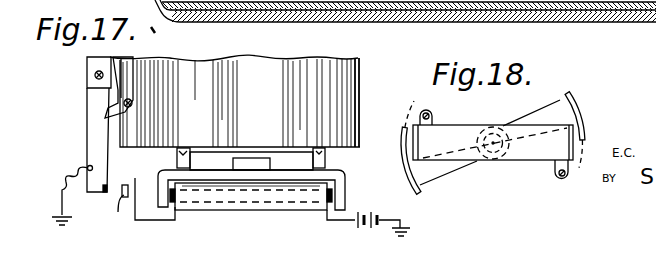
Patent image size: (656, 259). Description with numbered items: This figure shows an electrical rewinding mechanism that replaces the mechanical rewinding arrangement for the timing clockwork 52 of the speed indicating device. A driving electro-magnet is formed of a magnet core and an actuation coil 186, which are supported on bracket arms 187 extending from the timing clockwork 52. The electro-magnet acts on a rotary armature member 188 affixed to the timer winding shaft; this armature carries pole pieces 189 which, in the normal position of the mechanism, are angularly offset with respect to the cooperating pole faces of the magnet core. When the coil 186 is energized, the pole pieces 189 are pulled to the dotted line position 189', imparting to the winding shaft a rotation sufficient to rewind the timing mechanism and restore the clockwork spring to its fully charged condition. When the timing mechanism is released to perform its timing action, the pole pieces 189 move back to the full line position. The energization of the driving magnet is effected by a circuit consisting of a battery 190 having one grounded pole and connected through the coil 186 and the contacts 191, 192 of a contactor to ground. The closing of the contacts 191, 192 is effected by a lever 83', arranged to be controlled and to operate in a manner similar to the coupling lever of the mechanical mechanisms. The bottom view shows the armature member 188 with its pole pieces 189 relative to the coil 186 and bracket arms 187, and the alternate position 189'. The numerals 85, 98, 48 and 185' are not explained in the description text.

In FIG. 17, the timing clockwork 52 is at (358, 75).
In FIG. 17, the bracket 85 is at (90, 73).
In FIG. 17, the lever 83' is at (80, 140).
In FIG. 17, the latch 98 is at (133, 110).
In FIG. 17, the contact 192 is at (107, 193).
In FIG. 17, the contact 191 is at (122, 196).
In FIG. 17, the bracket arms 187 is at (177, 160).
In FIG. 18, the bracket arms 187 is at (431, 119).
In FIG. 17, the rotary armature member 188 is at (277, 168).
In FIG. 17, the pivot 48 is at (247, 157).
In FIG. 18, the pivot 48 is at (499, 126).
In FIG. 17, the pole pieces 189 is at (255, 190).
In FIG. 18, the pole pieces 189 is at (514, 150).
In FIG. 17, the actuation coil 186 is at (272, 206).
In FIG. 18, the actuation coil 186 is at (513, 162).
In FIG. 17, the core 185' is at (251, 211).
In FIG. 17, the battery 190 is at (369, 211).
In FIG. 18, the dotted line position 189' is at (513, 131).